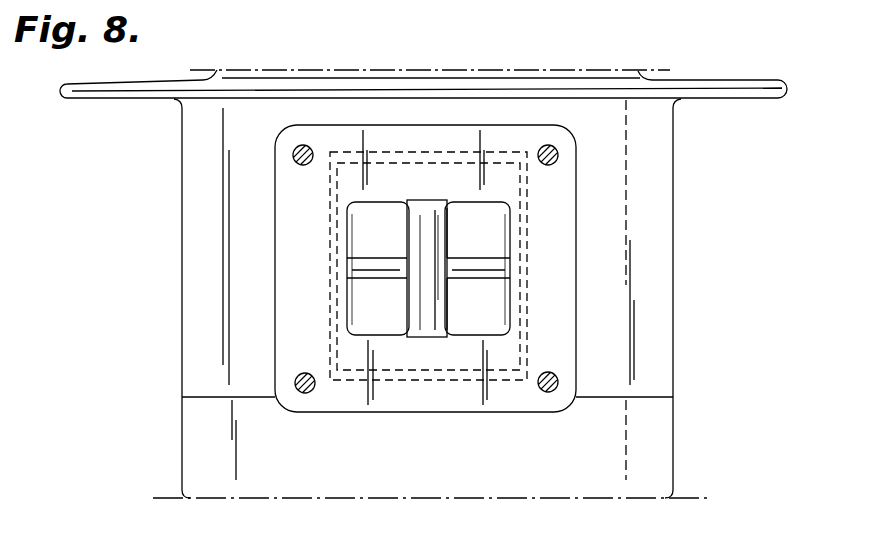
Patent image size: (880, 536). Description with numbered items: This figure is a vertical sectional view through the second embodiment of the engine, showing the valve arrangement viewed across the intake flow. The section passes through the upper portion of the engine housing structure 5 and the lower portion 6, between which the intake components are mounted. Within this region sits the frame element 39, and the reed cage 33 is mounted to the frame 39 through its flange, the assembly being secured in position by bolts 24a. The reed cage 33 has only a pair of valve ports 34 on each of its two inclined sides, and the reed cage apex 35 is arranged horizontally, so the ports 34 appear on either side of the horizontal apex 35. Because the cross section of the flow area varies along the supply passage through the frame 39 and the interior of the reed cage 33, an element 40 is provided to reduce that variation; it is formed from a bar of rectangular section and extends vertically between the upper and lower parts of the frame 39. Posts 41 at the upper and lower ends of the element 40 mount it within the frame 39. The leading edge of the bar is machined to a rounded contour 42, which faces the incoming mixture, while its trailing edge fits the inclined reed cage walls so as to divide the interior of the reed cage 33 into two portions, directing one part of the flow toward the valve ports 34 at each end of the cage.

The upper portion of the engine housing structure 5 is at (660, 166).
The lower portion of the engine housing structure 6 is at (665, 442).
The bolts 24a is at (557, 151).
The reed cage 33 is at (420, 160).
The valve ports 34 is at (362, 236).
The reed cage apex 35 is at (365, 283).
The frame element 39 is at (565, 201).
The element 40 is at (445, 314).
The posts 41 is at (437, 206).
The rounded contour 42 is at (445, 241).